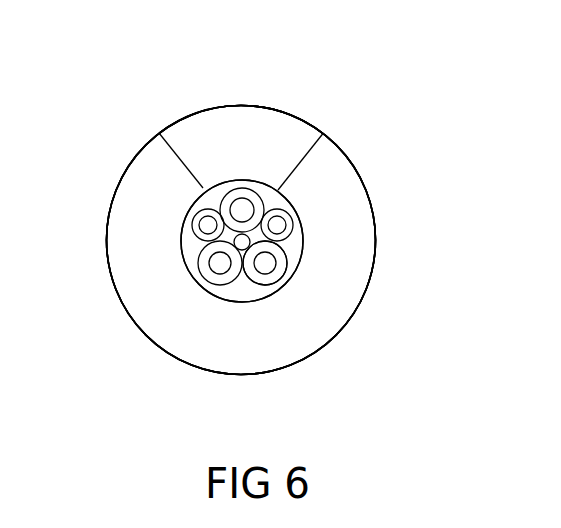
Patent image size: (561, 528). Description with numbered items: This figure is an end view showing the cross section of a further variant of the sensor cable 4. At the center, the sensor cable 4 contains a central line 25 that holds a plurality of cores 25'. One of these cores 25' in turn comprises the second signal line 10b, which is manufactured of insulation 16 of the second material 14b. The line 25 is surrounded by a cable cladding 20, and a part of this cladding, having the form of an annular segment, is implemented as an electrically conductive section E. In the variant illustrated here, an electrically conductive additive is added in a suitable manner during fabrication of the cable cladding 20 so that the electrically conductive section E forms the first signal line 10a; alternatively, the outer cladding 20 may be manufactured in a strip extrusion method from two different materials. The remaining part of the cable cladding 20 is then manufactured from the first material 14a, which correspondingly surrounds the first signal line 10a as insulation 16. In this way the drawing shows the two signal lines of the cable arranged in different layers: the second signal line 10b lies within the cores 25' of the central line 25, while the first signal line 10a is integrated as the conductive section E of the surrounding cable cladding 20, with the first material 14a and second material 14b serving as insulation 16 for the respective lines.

The sensor cable 4 is at (98, 130).
The electrically conductive section E is at (257, 132).
The first signal line 10a is at (257, 132).
The second signal line 10b is at (263, 270).
The first material 14a is at (377, 207).
The second material 14b is at (285, 280).
The insulation 16 is at (337, 405).
The cable cladding 20 is at (241, 240).
The central line 25 is at (195, 235).
The cores 25' is at (230, 306).